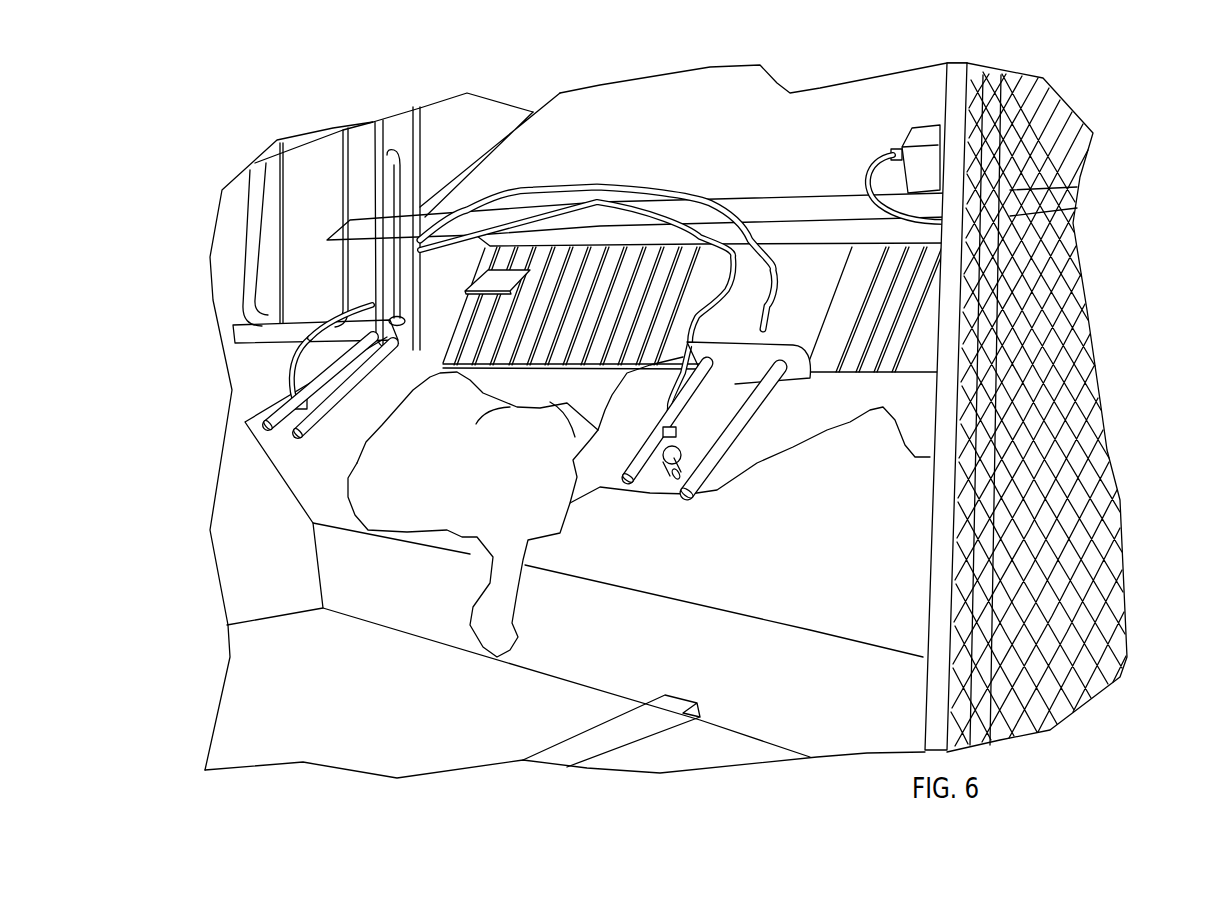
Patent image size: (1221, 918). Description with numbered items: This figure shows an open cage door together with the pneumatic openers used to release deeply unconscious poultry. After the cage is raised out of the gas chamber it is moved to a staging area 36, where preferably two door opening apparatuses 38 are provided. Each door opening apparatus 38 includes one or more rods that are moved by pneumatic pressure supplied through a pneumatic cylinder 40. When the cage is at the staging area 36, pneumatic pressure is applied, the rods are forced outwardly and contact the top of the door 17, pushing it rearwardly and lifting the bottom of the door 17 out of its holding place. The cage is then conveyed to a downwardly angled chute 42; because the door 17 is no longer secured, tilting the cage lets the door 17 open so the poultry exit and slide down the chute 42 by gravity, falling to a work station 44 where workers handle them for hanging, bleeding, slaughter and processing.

The door 17 is at (860, 372).
The staging area 36 is at (1100, 265).
The door opening apparatus 38 is at (800, 262).
The pneumatic cylinder 40 is at (343, 385).
The downwardly angled chute 42 is at (800, 600).
The work station 44 is at (313, 735).